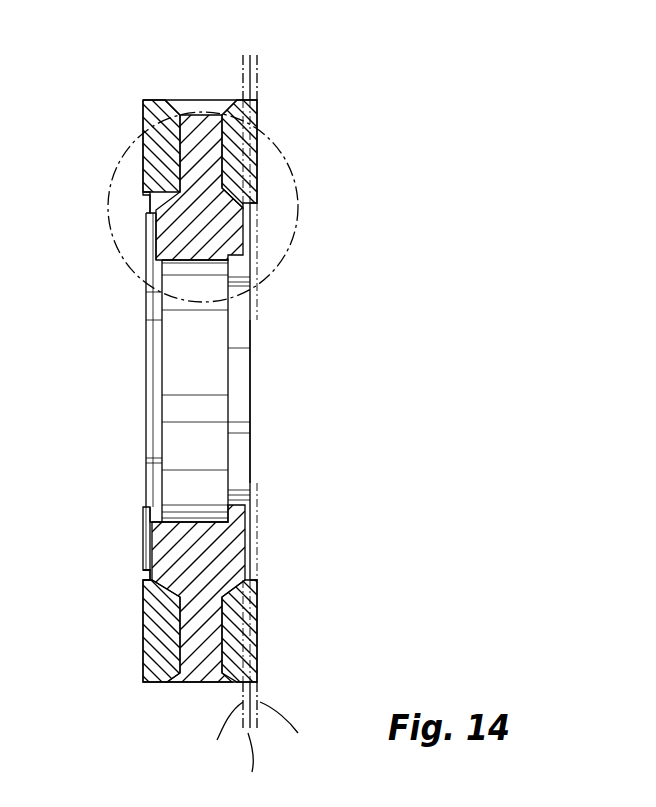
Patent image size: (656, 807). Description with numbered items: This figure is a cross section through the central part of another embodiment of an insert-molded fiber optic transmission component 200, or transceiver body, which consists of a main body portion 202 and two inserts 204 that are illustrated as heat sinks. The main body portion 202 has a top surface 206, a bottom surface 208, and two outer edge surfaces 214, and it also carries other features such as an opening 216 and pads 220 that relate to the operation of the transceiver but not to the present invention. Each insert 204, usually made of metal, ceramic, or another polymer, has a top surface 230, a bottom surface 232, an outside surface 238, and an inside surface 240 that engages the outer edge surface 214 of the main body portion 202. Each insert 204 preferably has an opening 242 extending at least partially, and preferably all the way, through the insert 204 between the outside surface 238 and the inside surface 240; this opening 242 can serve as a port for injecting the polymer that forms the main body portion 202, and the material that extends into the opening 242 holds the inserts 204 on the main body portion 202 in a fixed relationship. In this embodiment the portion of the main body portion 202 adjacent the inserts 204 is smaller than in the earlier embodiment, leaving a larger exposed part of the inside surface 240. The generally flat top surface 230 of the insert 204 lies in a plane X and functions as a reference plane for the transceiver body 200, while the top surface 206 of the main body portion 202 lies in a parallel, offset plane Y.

The insert-molded fiber optic transmission component 200 is at (353, 125).
The main body portion 202 is at (252, 418).
The insert 204 is at (143, 120).
The top surface 206 is at (150, 422).
The bottom surface 208 is at (252, 361).
The outer edge surface 214 is at (150, 577).
The opening 216 is at (168, 368).
The pads 220 is at (143, 516).
The top surface 230 is at (258, 108).
The bottom surface 232 is at (143, 158).
The outside surface 238 is at (243, 100).
The inside surface 240 is at (143, 193).
The opening 242 is at (176, 100).